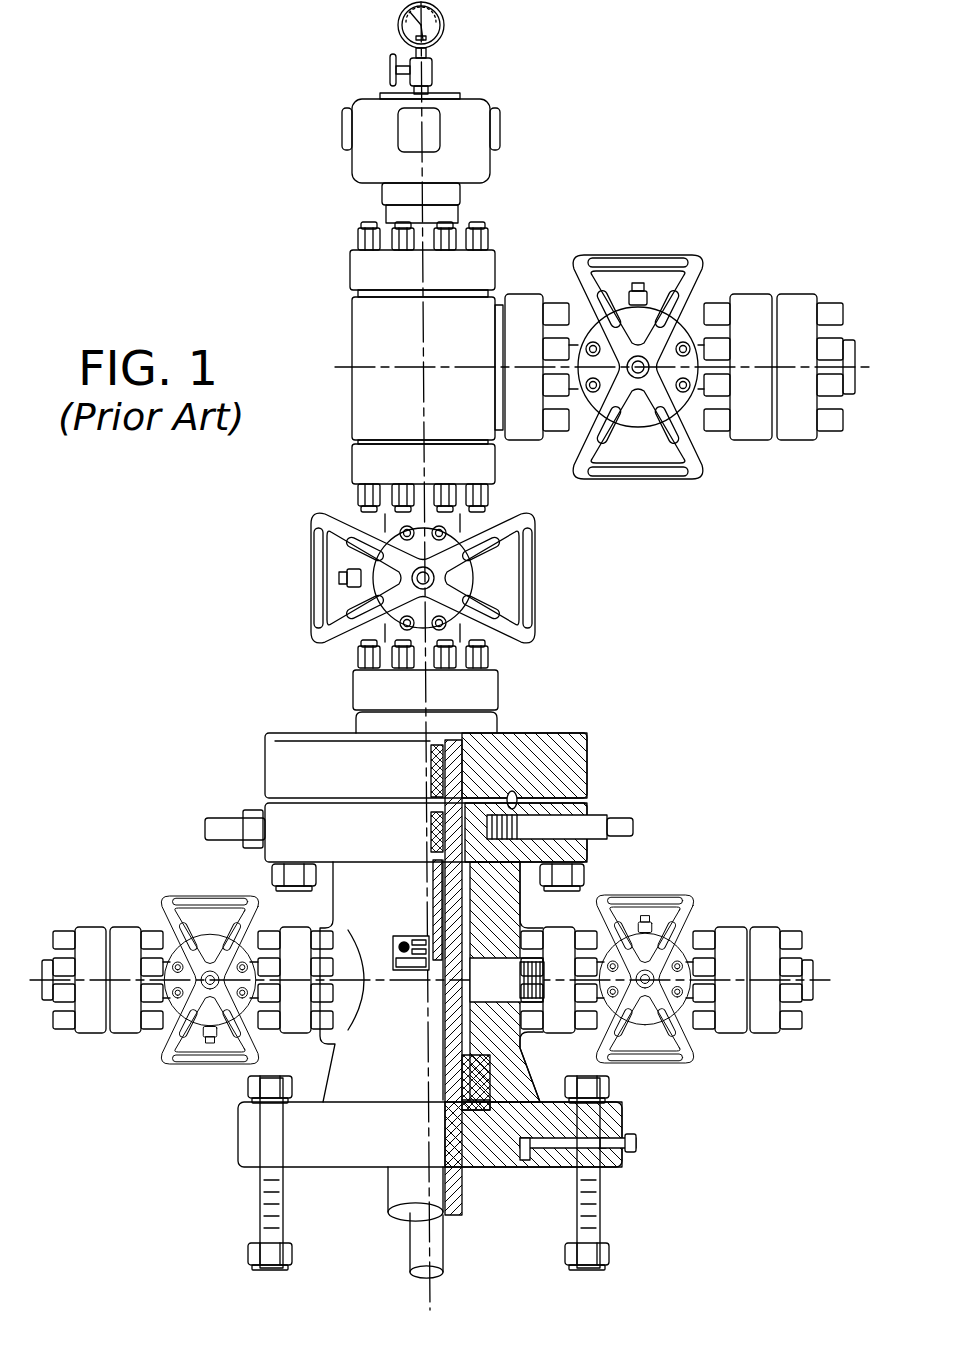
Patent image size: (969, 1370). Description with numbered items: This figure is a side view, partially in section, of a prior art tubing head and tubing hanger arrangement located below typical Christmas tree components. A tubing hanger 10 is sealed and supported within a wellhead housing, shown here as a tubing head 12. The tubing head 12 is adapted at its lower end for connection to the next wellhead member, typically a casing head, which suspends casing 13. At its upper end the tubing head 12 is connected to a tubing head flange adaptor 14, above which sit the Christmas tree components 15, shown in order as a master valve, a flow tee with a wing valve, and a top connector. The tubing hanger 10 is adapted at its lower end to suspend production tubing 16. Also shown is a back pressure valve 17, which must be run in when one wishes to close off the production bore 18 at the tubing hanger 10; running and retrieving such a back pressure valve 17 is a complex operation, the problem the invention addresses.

The tubing hanger 10 is at (452, 962).
The tubing head 12 is at (508, 912).
The casing 13 is at (476, 1210).
The tubing head flange adaptor 14 is at (577, 758).
The Christmas tree components 15 is at (533, 580).
The production tubing 16 is at (448, 1258).
The back pressure valve 17 is at (434, 790).
The production bore 18 is at (437, 1043).